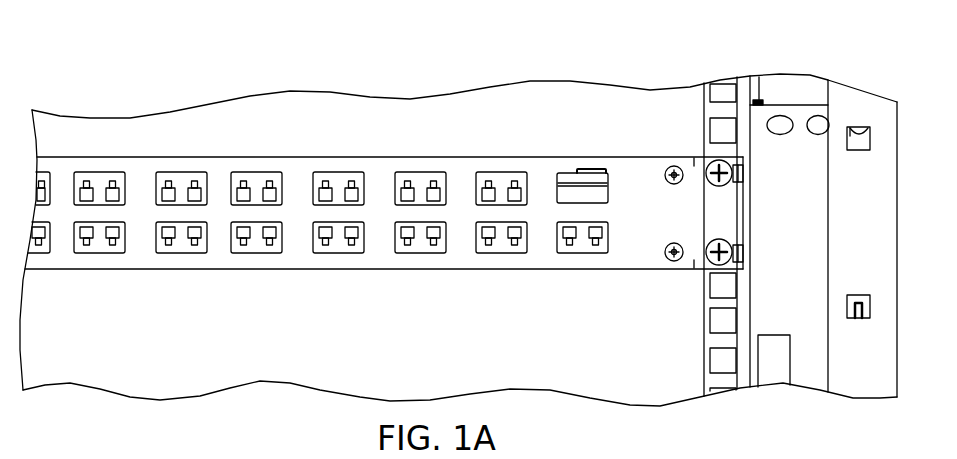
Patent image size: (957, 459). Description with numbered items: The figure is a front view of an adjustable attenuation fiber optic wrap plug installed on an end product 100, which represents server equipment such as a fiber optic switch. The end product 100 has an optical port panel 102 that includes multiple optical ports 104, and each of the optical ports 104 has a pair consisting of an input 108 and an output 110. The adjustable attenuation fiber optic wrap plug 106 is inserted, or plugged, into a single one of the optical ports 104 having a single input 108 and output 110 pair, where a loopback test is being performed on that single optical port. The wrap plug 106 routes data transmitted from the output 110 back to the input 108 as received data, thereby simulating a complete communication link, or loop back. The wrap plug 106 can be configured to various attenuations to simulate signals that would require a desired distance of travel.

The end product 100 is at (135, 54).
The optical port panel 102 is at (299, 140).
The optical ports 104 is at (557, 174).
The adjustable attenuation fiber optic wrap plug 106 is at (602, 197).
The input 108 is at (482, 230).
The output 110 is at (522, 235).